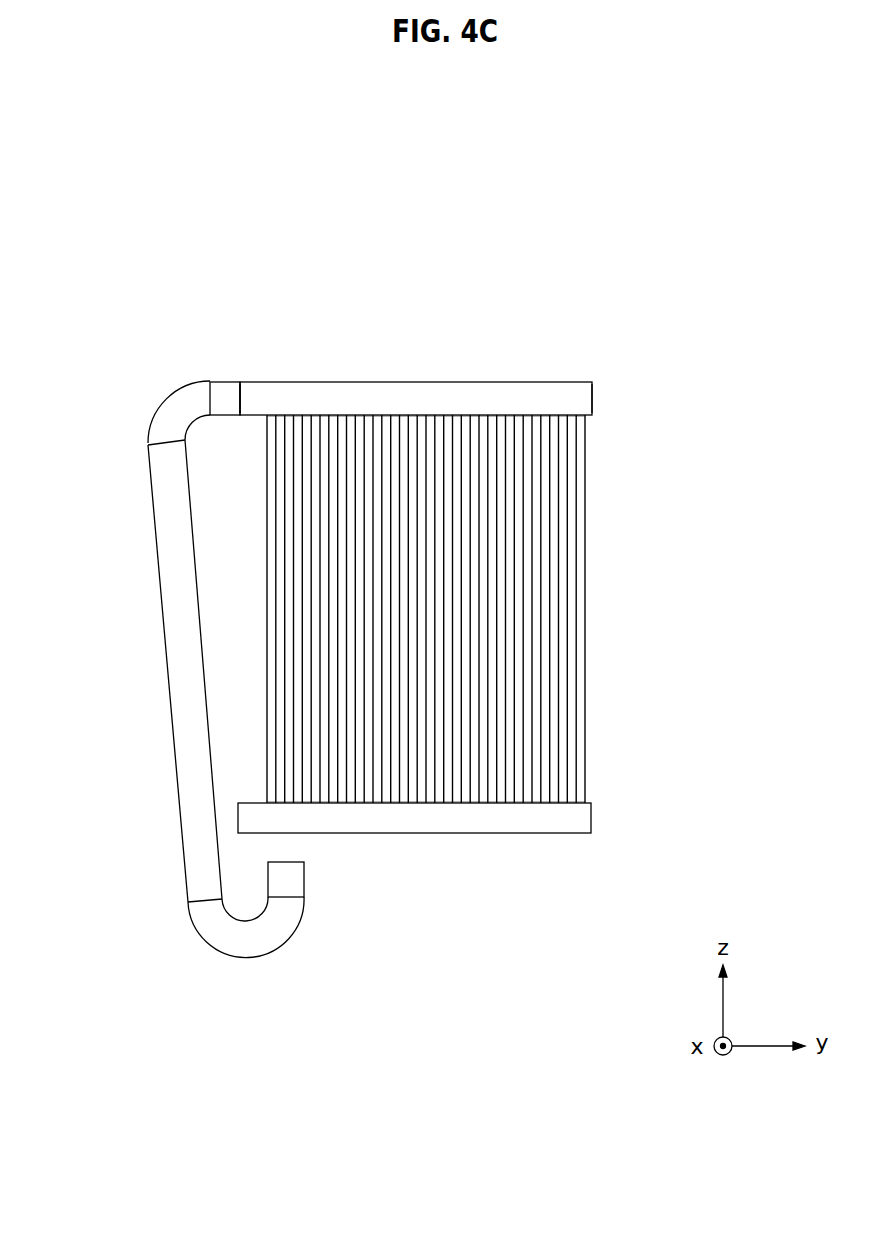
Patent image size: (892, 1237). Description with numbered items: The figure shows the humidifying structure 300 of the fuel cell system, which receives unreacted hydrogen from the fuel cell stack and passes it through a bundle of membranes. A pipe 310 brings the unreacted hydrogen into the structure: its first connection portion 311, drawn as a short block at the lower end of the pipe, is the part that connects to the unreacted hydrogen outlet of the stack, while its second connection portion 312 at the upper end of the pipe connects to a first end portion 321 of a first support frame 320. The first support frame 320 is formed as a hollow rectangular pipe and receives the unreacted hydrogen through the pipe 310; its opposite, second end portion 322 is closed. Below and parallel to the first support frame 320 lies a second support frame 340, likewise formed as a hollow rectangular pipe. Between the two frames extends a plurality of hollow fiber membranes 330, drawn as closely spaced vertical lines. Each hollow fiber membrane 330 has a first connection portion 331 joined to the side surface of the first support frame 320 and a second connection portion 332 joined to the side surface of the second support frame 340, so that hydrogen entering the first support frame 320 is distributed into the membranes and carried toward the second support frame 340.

The humidifying structure 300 is at (703, 285).
The pipe 310 is at (182, 630).
The first connection portion 311 is at (293, 878).
The second connection portion 312 is at (228, 390).
The first support frame 320 is at (383, 385).
The first end portion 321 is at (245, 398).
The second end portion 322 is at (587, 397).
The hollow fiber membranes 330 is at (586, 627).
The first connection portion 331 is at (587, 422).
The second connection portion 332 is at (586, 790).
The second support frame 340 is at (519, 819).